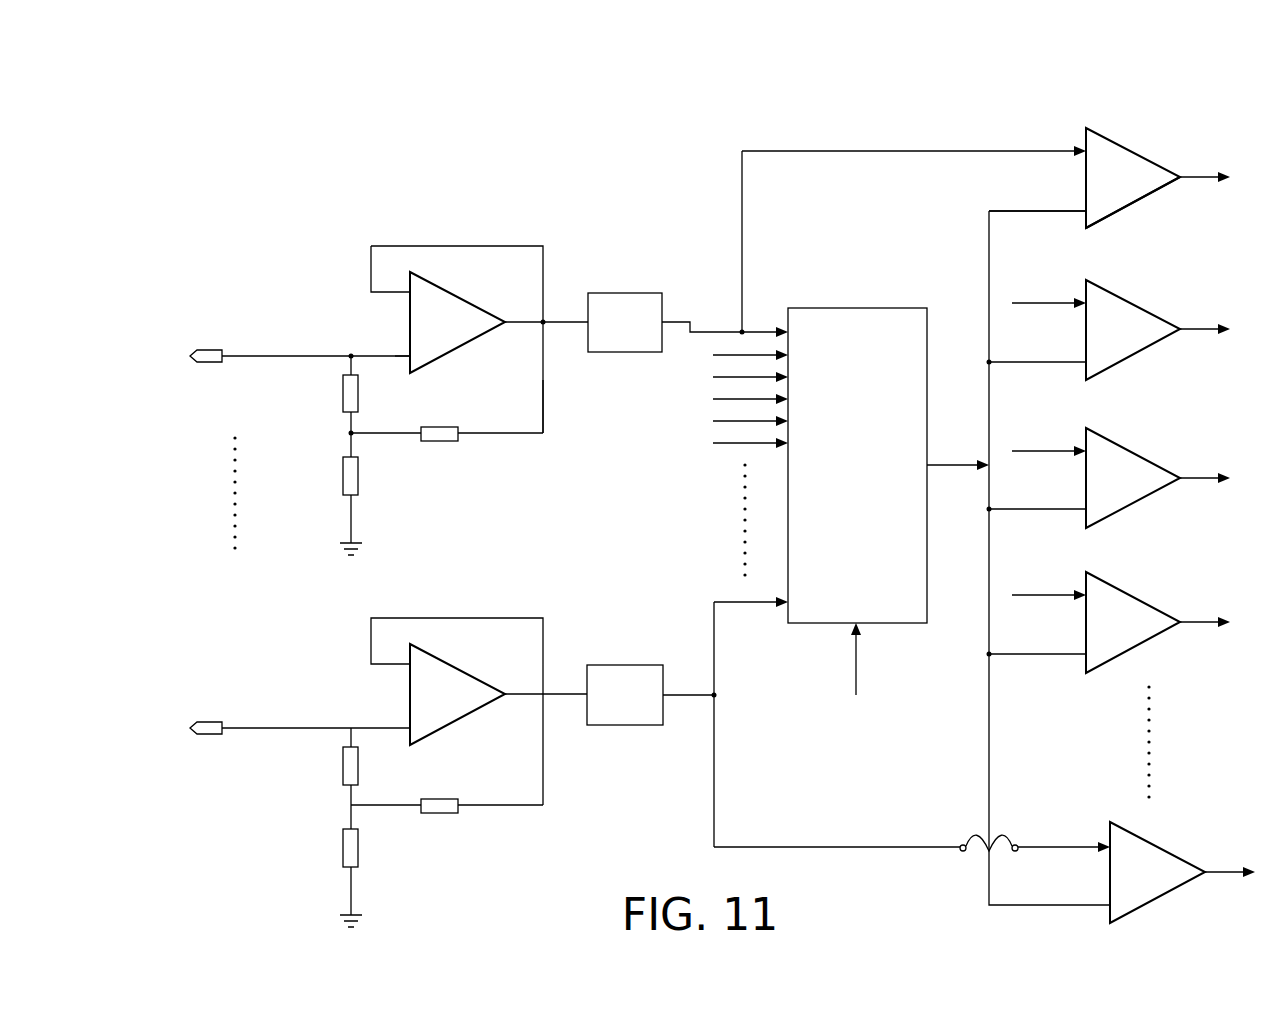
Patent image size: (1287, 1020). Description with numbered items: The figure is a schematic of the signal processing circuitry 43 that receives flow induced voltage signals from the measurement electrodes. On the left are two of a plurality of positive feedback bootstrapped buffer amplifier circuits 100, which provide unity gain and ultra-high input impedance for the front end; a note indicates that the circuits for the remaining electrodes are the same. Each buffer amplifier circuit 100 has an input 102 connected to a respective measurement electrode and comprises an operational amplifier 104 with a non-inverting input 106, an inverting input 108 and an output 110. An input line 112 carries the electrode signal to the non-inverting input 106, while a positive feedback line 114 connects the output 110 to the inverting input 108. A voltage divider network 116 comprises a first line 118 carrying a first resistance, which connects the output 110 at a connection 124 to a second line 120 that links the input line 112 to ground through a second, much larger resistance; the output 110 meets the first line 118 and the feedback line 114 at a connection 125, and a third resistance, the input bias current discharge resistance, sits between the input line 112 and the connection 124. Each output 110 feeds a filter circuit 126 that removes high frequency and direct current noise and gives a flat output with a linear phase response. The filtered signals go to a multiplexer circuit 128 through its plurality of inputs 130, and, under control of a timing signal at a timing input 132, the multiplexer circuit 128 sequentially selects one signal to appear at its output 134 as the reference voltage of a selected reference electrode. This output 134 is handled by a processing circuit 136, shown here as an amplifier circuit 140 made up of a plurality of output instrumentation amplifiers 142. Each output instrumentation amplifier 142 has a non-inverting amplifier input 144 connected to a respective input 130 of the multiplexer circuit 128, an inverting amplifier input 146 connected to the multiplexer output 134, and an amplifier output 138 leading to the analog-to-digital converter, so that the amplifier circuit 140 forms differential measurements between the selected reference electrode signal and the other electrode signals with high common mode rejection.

The signal processing circuitry 43 is at (567, 124).
The positive feedback bootstrapped buffer amplifier circuit 100 is at (318, 220).
The input 102 is at (209, 342).
The operational amplifier 104 is at (448, 304).
The non-inverting input 106 is at (410, 356).
The inverting input 108 is at (410, 292).
The output 110 is at (522, 320).
The input line 112 is at (290, 354).
The positive feedback line 114 is at (490, 246).
The voltage divider network 116 is at (512, 452).
The first line 118 is at (543, 376).
The second line 120 is at (351, 420).
The connection 124 is at (351, 433).
The connection 125 is at (543, 322).
The filter circuit 126 is at (625, 293).
The multiplexer circuit 128 is at (864, 306).
The input 130 is at (682, 322).
The timing input 132 is at (882, 671).
The output 134 is at (955, 465).
The processing circuit 136 is at (1101, 72).
The amplifier output 138 is at (1195, 176).
The amplifier circuit 140 is at (1142, 140).
The output instrumentation amplifier 142 is at (1130, 198).
The non-inverting amplifier input 144 is at (1086, 130).
The inverting amplifier input 146 is at (1086, 222).